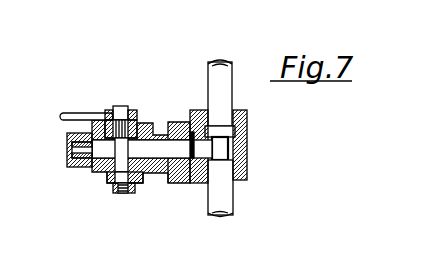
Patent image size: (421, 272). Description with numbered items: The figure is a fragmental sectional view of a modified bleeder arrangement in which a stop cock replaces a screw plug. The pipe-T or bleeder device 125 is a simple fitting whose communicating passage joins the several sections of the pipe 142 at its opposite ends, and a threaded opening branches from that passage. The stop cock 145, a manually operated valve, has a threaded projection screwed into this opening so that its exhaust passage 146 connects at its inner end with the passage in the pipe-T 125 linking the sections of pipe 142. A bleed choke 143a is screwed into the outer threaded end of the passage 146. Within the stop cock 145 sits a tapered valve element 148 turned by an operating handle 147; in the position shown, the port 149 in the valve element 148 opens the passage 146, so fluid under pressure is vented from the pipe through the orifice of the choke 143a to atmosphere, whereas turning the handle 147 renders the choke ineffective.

The pipe-T or bleeder device 125 is at (248, 137).
The pipe 142 is at (210, 82).
The bleed choke 143a is at (67, 149).
The stop cock 145 is at (145, 124).
The exhaust passage 146 is at (163, 148).
The operating handle 147 is at (77, 113).
The tapered valve element 148 is at (101, 181).
The port 149 is at (144, 175).